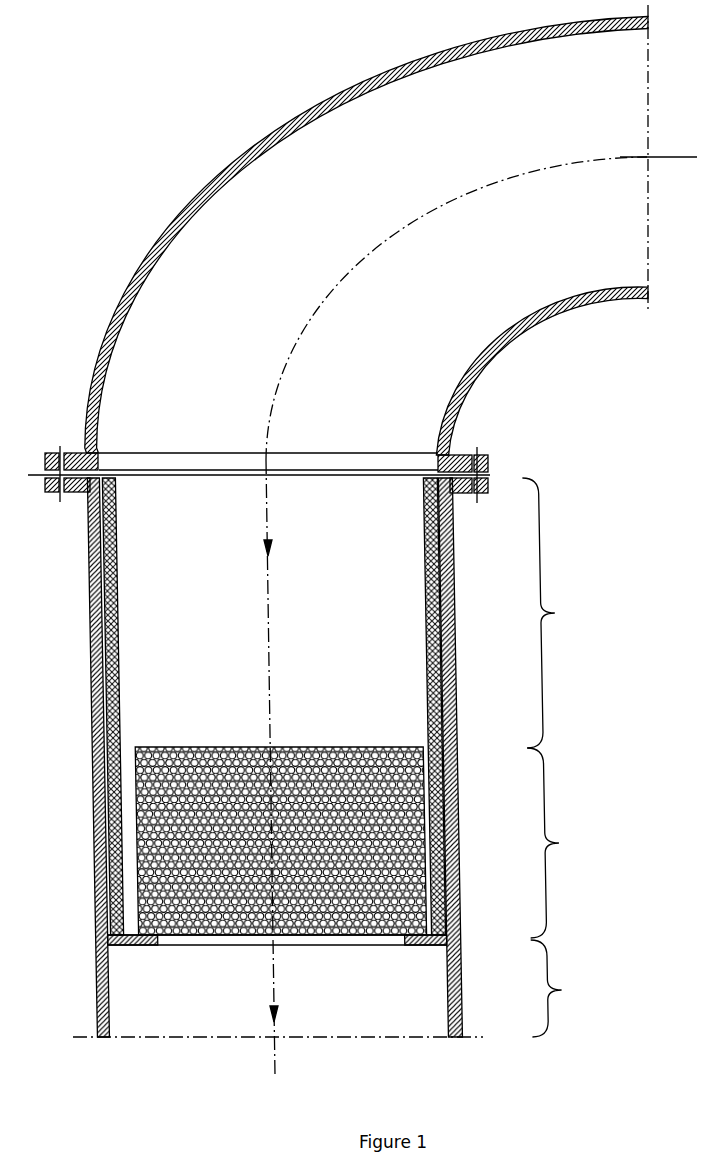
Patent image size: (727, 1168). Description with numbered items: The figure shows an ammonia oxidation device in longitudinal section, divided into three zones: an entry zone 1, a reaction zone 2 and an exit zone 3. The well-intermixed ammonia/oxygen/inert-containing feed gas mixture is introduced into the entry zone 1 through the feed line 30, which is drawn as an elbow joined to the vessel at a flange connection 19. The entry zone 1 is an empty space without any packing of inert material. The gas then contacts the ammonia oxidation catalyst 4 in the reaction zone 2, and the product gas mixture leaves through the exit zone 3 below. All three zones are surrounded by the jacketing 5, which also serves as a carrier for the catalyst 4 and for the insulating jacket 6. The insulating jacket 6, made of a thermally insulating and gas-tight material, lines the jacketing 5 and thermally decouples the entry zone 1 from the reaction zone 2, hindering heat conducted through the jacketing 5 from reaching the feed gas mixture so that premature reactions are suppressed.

The feed line 30 is at (530, 172).
The flange connection 19 is at (487, 450).
The entry zone 1 is at (571, 613).
The reaction zone 2 is at (379, 842).
The exit zone 3 is at (578, 988).
The ammonia oxidation catalyst 4 is at (285, 940).
The jacketing 5 is at (456, 1037).
The insulating jacket 6 is at (116, 600).